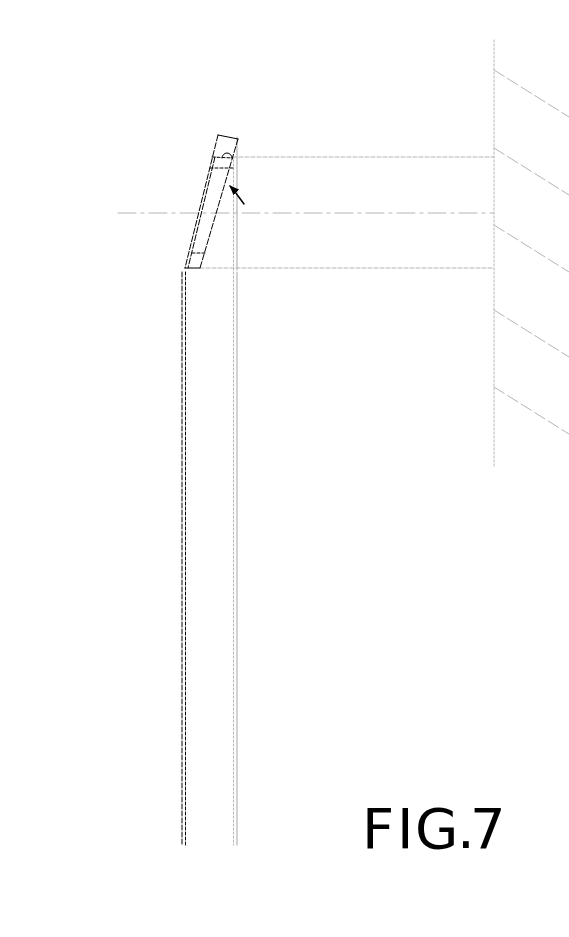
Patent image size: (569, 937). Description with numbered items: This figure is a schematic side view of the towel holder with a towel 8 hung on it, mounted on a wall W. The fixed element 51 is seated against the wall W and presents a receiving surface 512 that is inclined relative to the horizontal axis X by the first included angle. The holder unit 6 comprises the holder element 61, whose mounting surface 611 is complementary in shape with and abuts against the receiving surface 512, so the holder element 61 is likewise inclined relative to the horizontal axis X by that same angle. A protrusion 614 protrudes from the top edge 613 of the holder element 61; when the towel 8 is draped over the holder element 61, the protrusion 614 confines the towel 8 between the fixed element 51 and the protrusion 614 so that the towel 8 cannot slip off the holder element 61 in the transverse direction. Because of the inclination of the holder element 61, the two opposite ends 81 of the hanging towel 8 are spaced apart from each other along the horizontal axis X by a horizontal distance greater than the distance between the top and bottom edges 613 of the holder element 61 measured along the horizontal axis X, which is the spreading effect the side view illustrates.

The holder unit 6 is at (210, 192).
The holder element 61 is at (210, 192).
The mounting surface 611 is at (213, 227).
The top edge 613 is at (211, 158).
The protrusion 614 is at (227, 136).
The fixed element 51 is at (355, 180).
The receiving surface 512 is at (227, 180).
The towel 8 is at (212, 558).
The opposite ends 81 is at (183, 652).
The wall W is at (493, 124).
The horizontal axis X is at (292, 212).